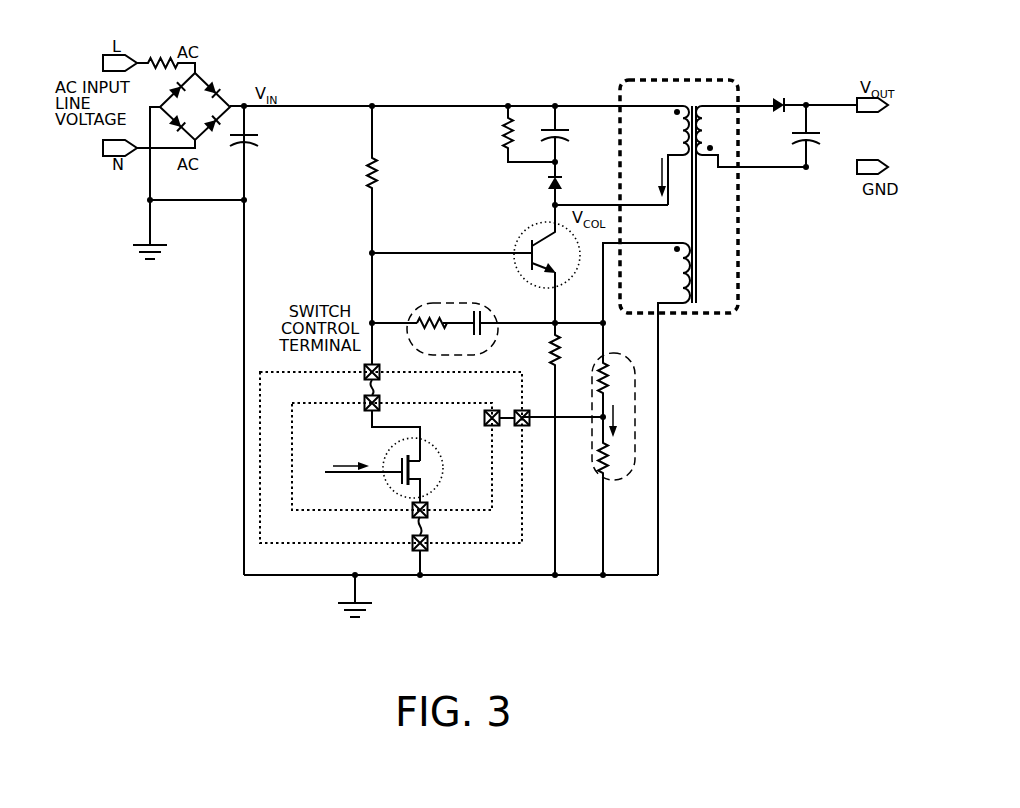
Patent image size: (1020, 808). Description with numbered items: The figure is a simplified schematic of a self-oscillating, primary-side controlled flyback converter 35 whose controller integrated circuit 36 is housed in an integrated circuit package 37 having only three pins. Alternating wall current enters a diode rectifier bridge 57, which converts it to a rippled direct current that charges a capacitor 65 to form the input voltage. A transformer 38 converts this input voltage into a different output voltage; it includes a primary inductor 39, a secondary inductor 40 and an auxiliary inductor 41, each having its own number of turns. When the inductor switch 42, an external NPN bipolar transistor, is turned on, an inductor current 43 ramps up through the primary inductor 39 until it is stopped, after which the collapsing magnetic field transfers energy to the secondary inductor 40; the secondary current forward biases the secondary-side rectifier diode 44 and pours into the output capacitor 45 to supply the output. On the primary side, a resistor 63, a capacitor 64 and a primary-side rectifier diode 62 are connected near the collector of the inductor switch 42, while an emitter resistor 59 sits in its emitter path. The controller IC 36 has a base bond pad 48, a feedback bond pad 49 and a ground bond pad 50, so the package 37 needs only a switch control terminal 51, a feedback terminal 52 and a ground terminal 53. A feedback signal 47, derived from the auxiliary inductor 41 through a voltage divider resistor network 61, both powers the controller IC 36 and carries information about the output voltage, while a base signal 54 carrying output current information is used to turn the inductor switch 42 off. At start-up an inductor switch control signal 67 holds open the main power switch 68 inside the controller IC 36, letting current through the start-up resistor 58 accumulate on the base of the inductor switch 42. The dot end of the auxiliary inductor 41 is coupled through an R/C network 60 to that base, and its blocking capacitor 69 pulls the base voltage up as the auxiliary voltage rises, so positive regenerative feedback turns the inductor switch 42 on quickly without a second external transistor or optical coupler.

The flyback converter 35 is at (518, 35).
The controller integrated circuit 36 is at (292, 411).
The integrated circuit package 37 is at (495, 546).
The transformer 38 is at (658, 78).
The primary inductor 39 is at (671, 144).
The secondary inductor 40 is at (751, 125).
The auxiliary inductor 41 is at (646, 399).
The inductor switch Q1 42 is at (524, 238).
The inductor current 43 is at (659, 172).
The secondary-side rectifier diode D1 44 is at (779, 97).
The output capacitor 45 is at (820, 135).
The feedback signal 47 is at (606, 417).
The base bond pad 48 is at (381, 401).
The feedback bond pad 49 is at (484, 418).
The ground bond pad 50 is at (412, 508).
The switch control terminal 51 is at (365, 371).
The feedback terminal 52 is at (524, 426).
The ground terminal 53 is at (428, 546).
The base signal 54 is at (361, 278).
The diode rectifier bridge 57 is at (205, 116).
The start-up resistor R_START 58 is at (380, 172).
The emitter resistor R_E 59 is at (547, 355).
The R/C network 60 is at (423, 304).
The voltage divider resistor network 61 is at (610, 355).
The primary-side rectifier diode D2 62 is at (563, 178).
The resistor 63 is at (502, 137).
The capacitor 64 is at (567, 130).
The capacitor 65 is at (252, 137).
The inductor switch control signal 67 is at (354, 462).
The main power switch Q2 68 is at (441, 478).
The blocking capacitor C_B 69 is at (477, 306).